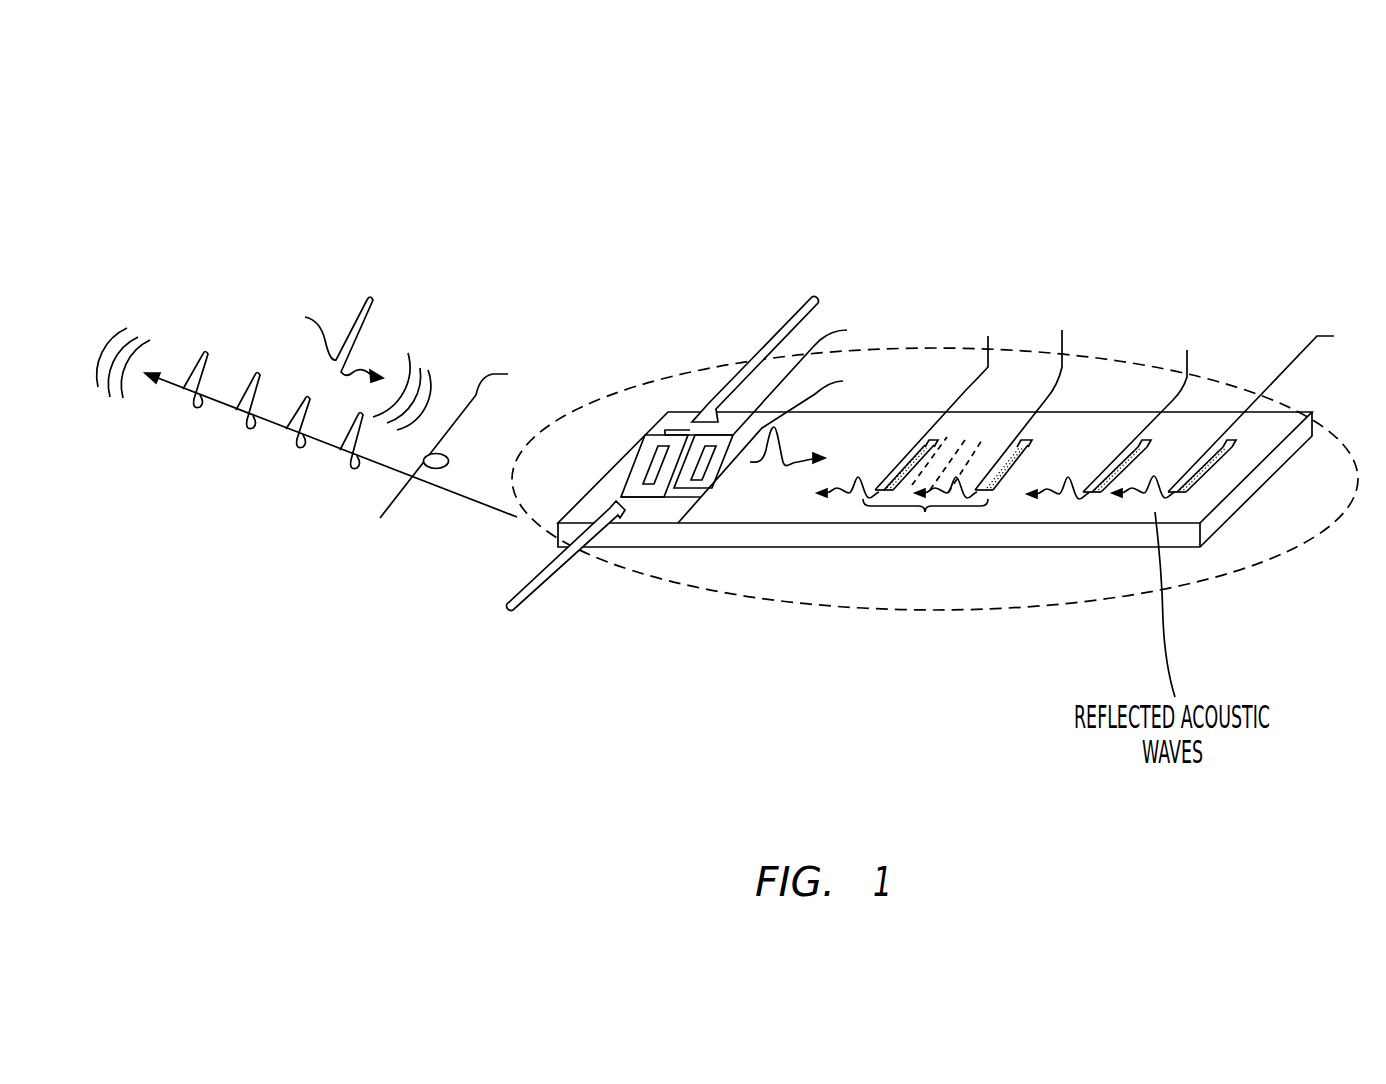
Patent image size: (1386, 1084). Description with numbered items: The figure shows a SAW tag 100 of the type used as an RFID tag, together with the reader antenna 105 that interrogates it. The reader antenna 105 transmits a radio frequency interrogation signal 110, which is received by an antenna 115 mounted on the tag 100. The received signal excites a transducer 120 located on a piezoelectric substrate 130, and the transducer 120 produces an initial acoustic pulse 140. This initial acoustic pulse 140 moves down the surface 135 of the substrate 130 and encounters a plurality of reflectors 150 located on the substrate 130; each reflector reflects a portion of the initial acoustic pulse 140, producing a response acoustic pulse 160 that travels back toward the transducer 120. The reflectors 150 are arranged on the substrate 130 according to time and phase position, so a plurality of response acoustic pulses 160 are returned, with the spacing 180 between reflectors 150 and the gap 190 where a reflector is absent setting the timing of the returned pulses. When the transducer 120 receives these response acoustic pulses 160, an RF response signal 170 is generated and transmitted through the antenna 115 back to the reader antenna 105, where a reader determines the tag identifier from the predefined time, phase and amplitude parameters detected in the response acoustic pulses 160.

The SAW tag 100 is at (370, 688).
The reader antenna 105 is at (343, 456).
The RF interrogation signal 110 is at (343, 288).
The antenna 115 is at (800, 310).
The transducer 120 is at (485, 575).
The piezoelectric substrate 130 is at (1273, 425).
The surface 135 is at (1057, 512).
The initial acoustic pulse 140 is at (707, 645).
The reflectors 150 is at (984, 490).
The response acoustic pulse 160 is at (921, 413).
The RF response signal 170 is at (207, 351).
The reflector spacing 180 is at (925, 522).
The reflector position gap 190 is at (994, 398).